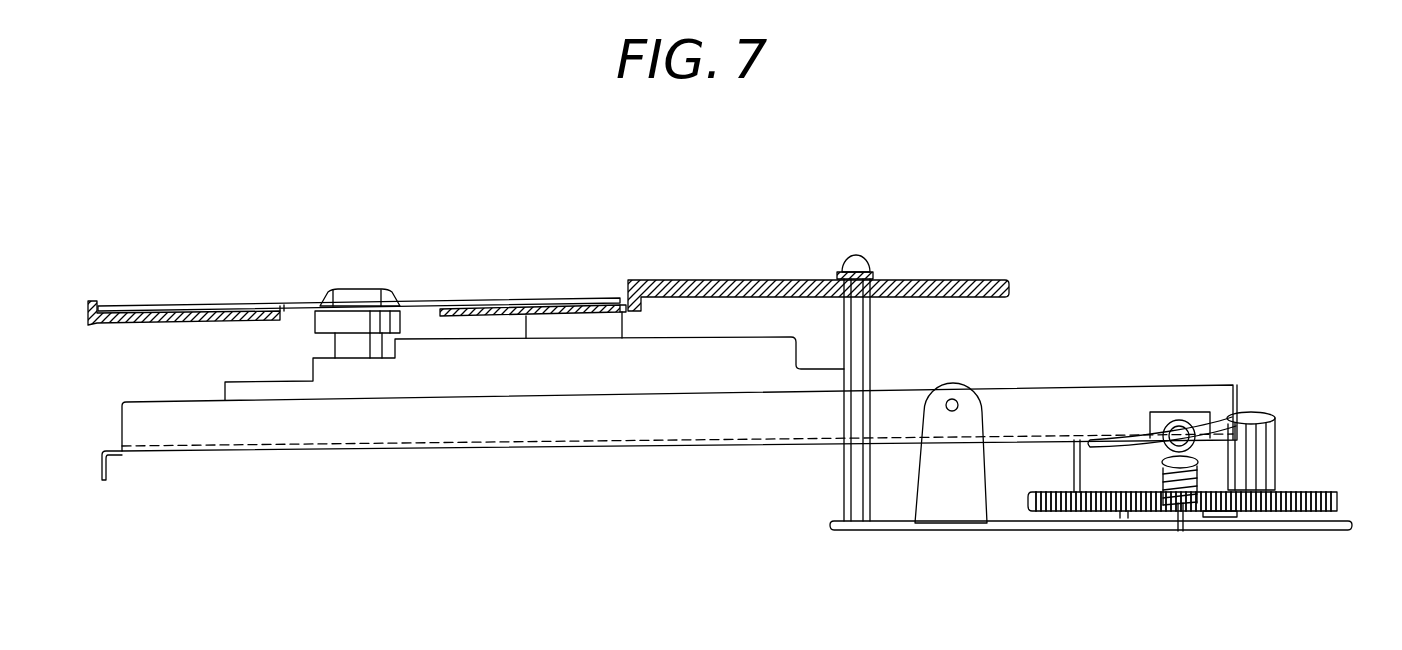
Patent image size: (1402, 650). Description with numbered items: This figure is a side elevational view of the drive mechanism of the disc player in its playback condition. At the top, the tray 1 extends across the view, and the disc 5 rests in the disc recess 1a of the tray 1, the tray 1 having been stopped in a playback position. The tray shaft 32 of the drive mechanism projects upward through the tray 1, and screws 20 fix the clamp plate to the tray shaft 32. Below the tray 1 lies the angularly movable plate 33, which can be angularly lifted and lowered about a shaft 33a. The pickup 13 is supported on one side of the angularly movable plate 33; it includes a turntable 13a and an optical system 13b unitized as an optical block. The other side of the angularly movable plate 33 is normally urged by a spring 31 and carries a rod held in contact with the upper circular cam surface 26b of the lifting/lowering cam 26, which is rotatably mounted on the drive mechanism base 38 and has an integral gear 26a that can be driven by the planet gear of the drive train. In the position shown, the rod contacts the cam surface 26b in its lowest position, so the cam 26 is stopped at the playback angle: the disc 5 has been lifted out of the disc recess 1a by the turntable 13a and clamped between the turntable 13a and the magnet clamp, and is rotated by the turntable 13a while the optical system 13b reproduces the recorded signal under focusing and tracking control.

The tray 1 is at (628, 284).
The disc recess 1a is at (125, 313).
The disc 5 is at (243, 302).
The pickup 13 is at (428, 388).
The turntable 13a is at (352, 298).
The optical system 13b is at (593, 327).
The screws 20 is at (858, 256).
The lifting/lowering cam 26 is at (1277, 462).
The gear 26a is at (1298, 512).
The upper circular cam surface 26b is at (1275, 419).
The spring 31 is at (1181, 530).
The tray shaft 32 is at (860, 345).
The angularly movable plate 33 is at (262, 435).
The shaft 33a is at (956, 402).
The drive mechanism base 38 is at (896, 531).